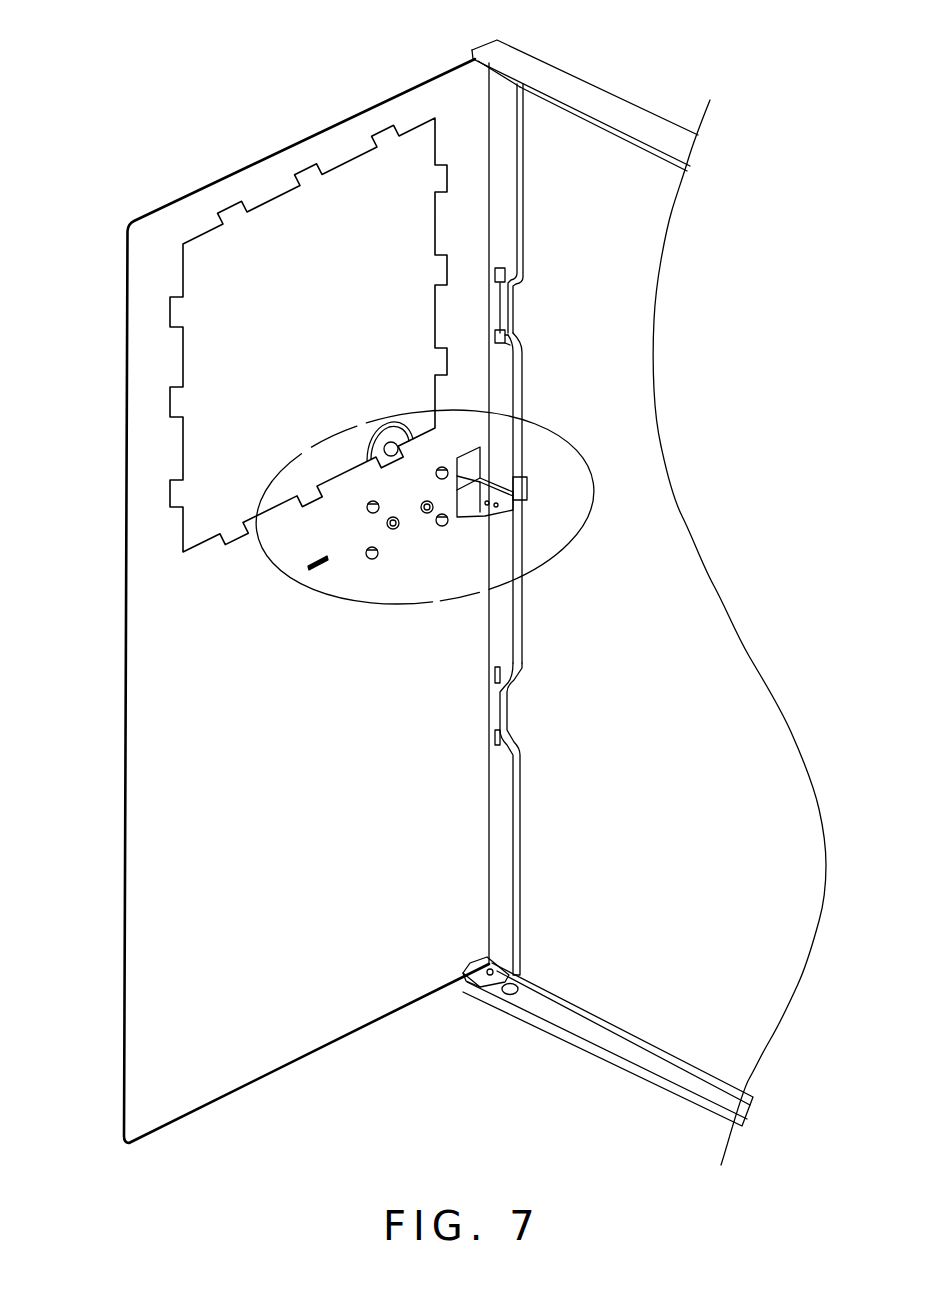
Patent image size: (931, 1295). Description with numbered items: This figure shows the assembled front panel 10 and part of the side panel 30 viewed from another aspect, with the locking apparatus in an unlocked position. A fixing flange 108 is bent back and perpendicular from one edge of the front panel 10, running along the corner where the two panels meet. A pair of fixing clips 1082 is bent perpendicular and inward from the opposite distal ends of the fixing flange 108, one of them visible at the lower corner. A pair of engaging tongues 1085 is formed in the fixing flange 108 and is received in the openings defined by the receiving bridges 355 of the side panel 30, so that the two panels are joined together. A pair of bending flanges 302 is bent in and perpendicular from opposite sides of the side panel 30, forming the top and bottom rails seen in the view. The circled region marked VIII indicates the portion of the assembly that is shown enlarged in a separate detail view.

The front panel 10 is at (170, 750).
The fixing flange 108 is at (554, 493).
The engaging tongues 1085 is at (492, 275).
The receiving bridges 355 is at (503, 311).
The side panel 30 is at (628, 357).
The bending flanges 302 is at (633, 1050).
The fixing clips 1082 is at (478, 989).
The detail view indicator VIII is at (590, 470).